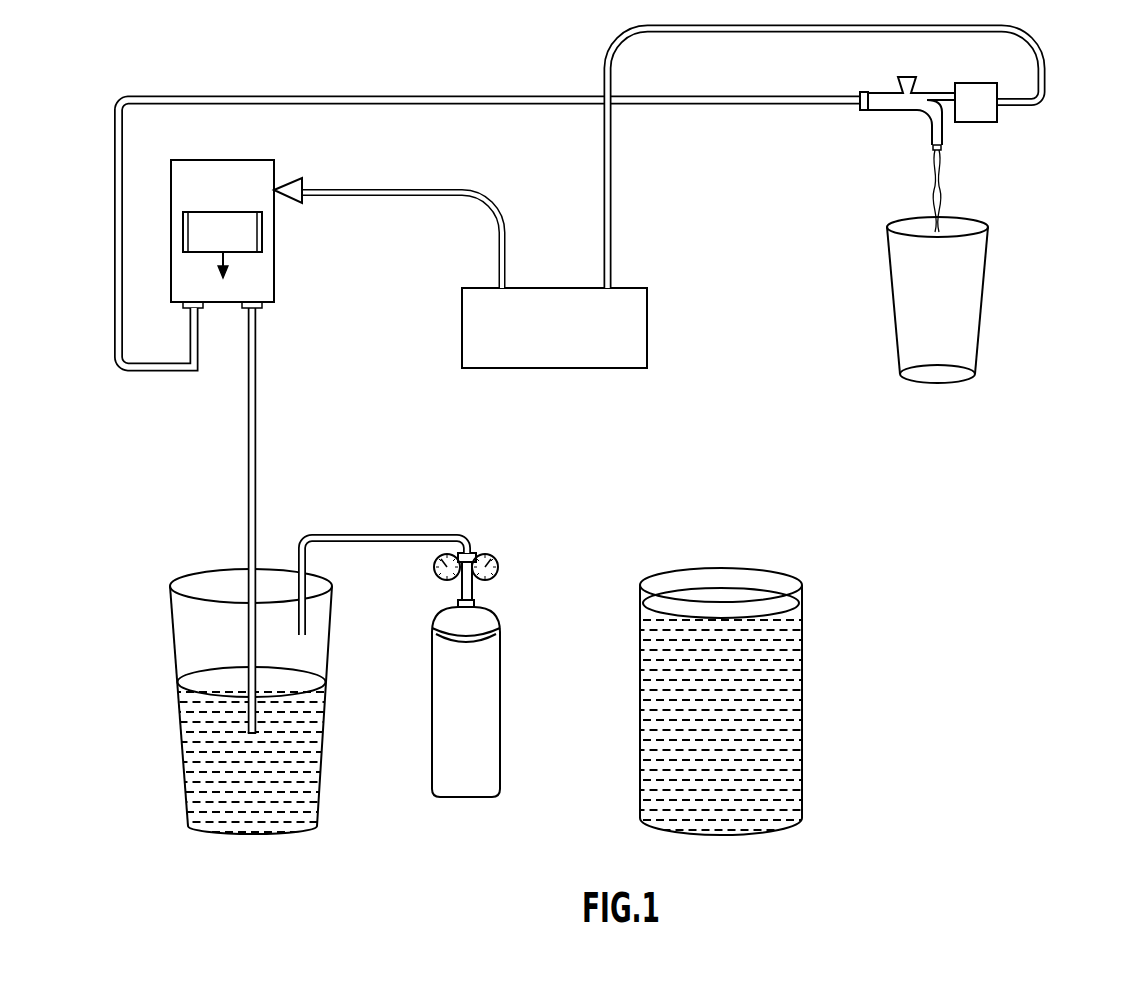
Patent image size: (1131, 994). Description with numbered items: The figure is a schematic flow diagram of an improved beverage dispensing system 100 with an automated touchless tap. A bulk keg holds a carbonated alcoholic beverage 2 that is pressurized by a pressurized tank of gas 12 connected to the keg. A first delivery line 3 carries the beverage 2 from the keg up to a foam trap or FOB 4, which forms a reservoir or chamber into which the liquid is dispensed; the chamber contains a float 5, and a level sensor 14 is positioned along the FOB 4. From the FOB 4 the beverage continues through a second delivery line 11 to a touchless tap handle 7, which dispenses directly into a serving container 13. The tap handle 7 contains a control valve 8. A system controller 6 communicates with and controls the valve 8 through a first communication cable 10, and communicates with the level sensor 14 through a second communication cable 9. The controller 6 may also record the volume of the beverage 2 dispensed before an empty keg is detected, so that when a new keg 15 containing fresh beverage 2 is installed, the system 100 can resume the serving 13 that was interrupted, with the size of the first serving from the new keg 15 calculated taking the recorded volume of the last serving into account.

The carbonated alcoholic beverage 2 is at (300, 755).
The first delivery line 3 is at (258, 428).
The foam trap (FOB) 4 is at (248, 216).
The float 5 is at (233, 230).
The system controller 6 is at (648, 327).
The touchless tap handle 7 is at (883, 90).
The valve 8 is at (998, 112).
The second communication cable 9 is at (388, 190).
The first communication cable 10 is at (1046, 64).
The second delivery line 11 is at (265, 95).
The pressurized tank of gas 12 is at (450, 685).
The serving container 13 is at (985, 292).
The level sensor 14 is at (285, 181).
The new keg 15 is at (780, 572).
The beverage dispensing system 100 is at (868, 450).